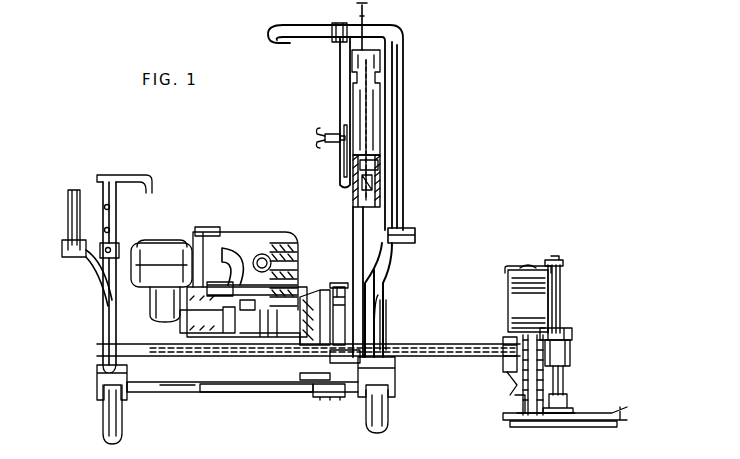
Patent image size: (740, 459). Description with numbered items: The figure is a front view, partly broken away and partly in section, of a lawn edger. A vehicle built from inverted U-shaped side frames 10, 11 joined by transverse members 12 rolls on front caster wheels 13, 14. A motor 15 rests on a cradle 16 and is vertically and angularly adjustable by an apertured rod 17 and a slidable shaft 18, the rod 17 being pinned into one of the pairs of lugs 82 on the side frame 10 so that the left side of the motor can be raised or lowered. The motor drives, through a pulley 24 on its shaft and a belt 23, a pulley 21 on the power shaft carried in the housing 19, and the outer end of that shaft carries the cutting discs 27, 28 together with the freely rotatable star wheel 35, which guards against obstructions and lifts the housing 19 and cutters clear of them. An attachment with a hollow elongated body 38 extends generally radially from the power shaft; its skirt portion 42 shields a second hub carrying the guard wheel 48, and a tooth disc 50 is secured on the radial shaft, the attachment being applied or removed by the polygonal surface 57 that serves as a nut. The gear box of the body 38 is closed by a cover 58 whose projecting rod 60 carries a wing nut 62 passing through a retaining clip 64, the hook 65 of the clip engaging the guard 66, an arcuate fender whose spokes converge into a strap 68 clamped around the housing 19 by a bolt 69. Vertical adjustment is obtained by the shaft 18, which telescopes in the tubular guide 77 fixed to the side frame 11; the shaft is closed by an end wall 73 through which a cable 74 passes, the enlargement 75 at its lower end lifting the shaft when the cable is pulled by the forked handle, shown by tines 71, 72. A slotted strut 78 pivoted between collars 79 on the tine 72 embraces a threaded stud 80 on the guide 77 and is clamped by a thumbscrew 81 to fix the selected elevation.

The inverted U-shaped side frame 10 is at (108, 303).
The inverted U-shaped side frame 11 is at (383, 288).
The transverse member 12 is at (107, 357).
The front caster wheel 13 is at (107, 417).
The front caster wheel 14 is at (379, 412).
The motor 15 is at (271, 225).
The cradle 16 is at (187, 387).
The apertured rod 17 is at (113, 201).
The slidable shaft 18 is at (359, 196).
The housing 19 is at (428, 343).
The pulley 21 is at (307, 389).
The belt 23 is at (297, 330).
The pulley 24 is at (313, 303).
The cutting disc 27 is at (540, 415).
The cutting disc 28 is at (546, 431).
The star wheel 35 is at (523, 398).
The hollow elongated body 38 is at (566, 380).
The skirt portion 42 is at (568, 407).
The guard wheel 48 is at (623, 413).
The tooth disc 50 is at (608, 420).
The polygonal outer surface 57 is at (561, 352).
The cover 58 is at (564, 331).
The rod 60 is at (560, 302).
The wing nut 62 is at (560, 263).
The retaining clip 64 is at (530, 265).
The hook 65 is at (510, 272).
The guard 66 is at (515, 292).
The strap 68 is at (513, 343).
The bolt 69 is at (507, 381).
The tine 71 is at (68, 213).
The tine 72 is at (405, 208).
The end wall 73 is at (378, 170).
The cable 74 is at (363, 17).
The enlargement 75 is at (380, 187).
The tubular guide 77 is at (372, 110).
The slotted strut 78 is at (339, 81).
The collar 79 is at (337, 42).
The threaded stud 80 is at (322, 145).
The thumbscrew 81 is at (323, 129).
The lugs 82 is at (114, 247).